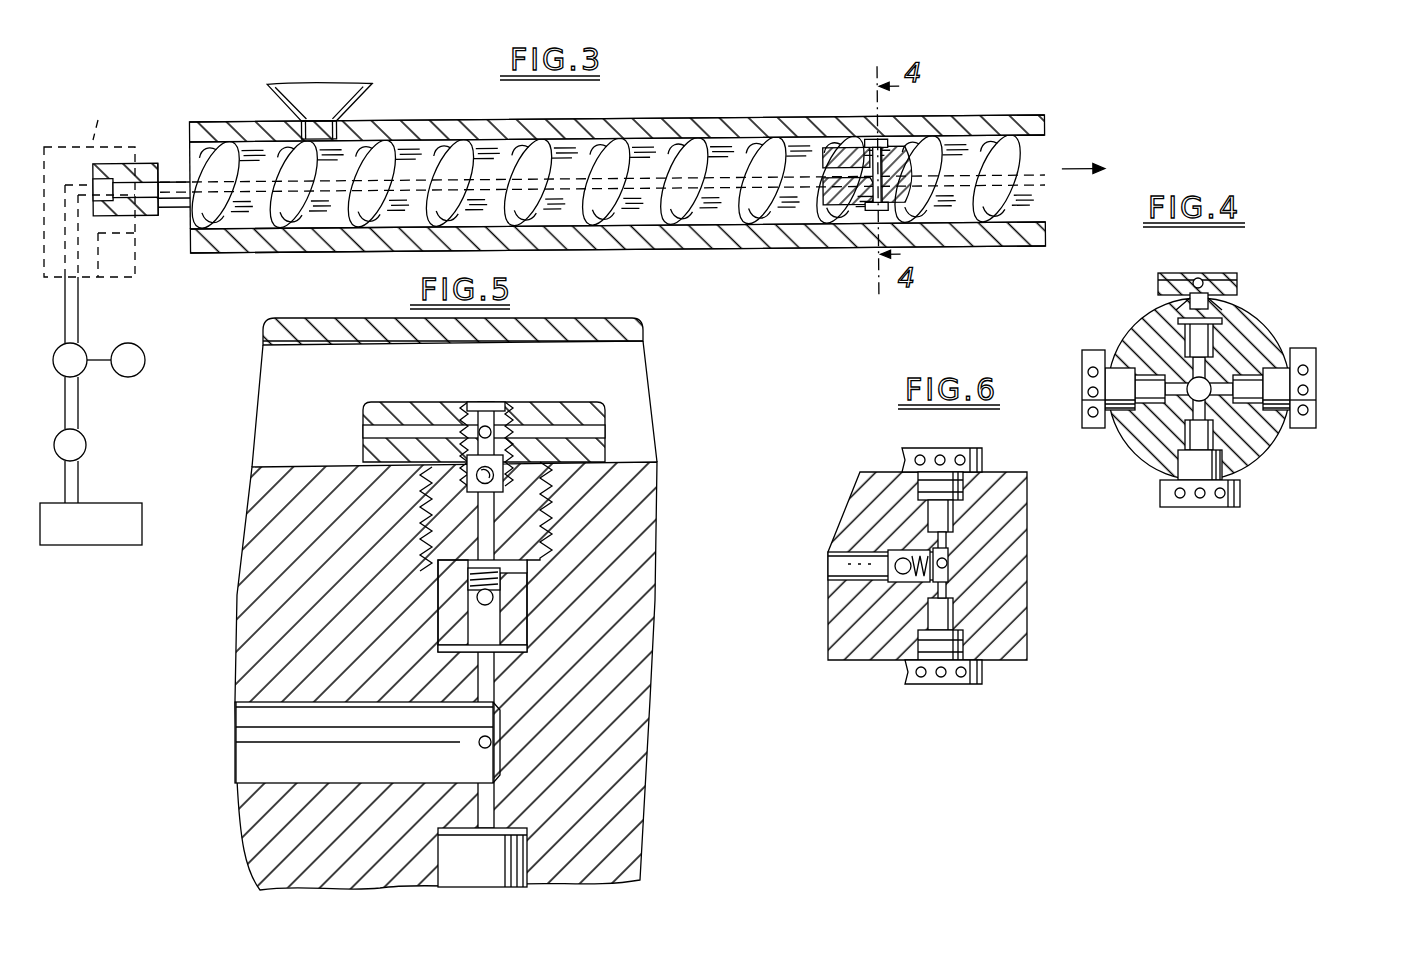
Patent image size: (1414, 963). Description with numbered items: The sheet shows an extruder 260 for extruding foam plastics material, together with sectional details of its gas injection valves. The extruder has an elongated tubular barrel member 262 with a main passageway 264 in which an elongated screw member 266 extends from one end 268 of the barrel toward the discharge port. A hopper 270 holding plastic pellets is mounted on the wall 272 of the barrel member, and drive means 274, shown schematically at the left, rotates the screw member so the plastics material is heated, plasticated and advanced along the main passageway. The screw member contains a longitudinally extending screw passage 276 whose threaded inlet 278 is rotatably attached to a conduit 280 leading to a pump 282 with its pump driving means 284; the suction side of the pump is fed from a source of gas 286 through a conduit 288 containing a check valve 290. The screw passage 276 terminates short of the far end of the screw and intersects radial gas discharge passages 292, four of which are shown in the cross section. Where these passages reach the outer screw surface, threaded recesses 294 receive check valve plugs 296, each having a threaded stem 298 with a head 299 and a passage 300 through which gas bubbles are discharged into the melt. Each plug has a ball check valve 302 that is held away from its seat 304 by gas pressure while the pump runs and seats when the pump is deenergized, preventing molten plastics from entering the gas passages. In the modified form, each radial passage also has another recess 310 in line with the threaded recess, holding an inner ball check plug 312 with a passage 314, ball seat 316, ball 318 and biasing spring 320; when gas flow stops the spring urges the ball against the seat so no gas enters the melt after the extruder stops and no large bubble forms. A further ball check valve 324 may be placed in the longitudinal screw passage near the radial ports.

In FIG. 3, the extruder 260 is at (262, 256).
In FIG. 3, the barrel member 262 is at (492, 128).
In FIG. 3, the main passageway 264 is at (556, 232).
In FIG. 5, the main passageway 264 is at (645, 340).
In FIG. 3, the screw member 266 is at (200, 152).
In FIG. 3, the one end of barrel 268 is at (222, 132).
In FIG. 3, the hopper 270 is at (350, 96).
In FIG. 3, the wall of the barrel member 272 is at (610, 132).
In FIG. 5, the wall of the barrel member 272 is at (645, 320).
In FIG. 3, the drive means 274 is at (89, 186).
In FIG. 3, the screw passage 276 is at (143, 192).
In FIG. 5, the screw passage 276 is at (258, 775).
In FIG. 4, the screw passage 276 is at (1190, 385).
In FIG. 6, the screw passage 276 is at (845, 565).
In FIG. 3, the threaded inlet 278 is at (100, 182).
In FIG. 3, the conduit 280 is at (78, 311).
In FIG. 3, the pump 282 is at (83, 372).
In FIG. 3, the pump driving means 284 is at (142, 350).
In FIG. 3, the source of gas 286 is at (87, 546).
In FIG. 3, the conduit 288 is at (78, 410).
In FIG. 3, the check valve 290 is at (86, 450).
In FIG. 5, the radial gas discharge passage 292 is at (500, 680).
In FIG. 4, the radial gas discharge passage 292 is at (1207, 395).
In FIG. 6, the radial gas discharge passage 292 is at (942, 565).
In FIG. 5, the threaded recess 294 is at (425, 522).
In FIG. 4, the threaded recess 294 is at (1192, 320).
In FIG. 6, the threaded recess 294 is at (927, 566).
In FIG. 3, the check valve plug 296 is at (876, 146).
In FIG. 5, the check valve plug 296 is at (570, 402).
In FIG. 4, the check valve plug 296 is at (1225, 275).
In FIG. 6, the check valve plug 296 is at (958, 448).
In FIG. 5, the threaded stem 298 is at (505, 483).
In FIG. 4, the threaded stem 298 is at (1210, 318).
In FIG. 5, the head 299 is at (608, 413).
In FIG. 5, the plug passage 300 is at (520, 530).
In FIG. 5, the ball check valve 302 is at (478, 472).
In FIG. 4, the ball check valve 302 is at (1206, 305).
In FIG. 5, the seat 304 is at (500, 480).
In FIG. 5, the recess 310 is at (520, 640).
In FIG. 5, the inner ball check plug 312 is at (440, 625).
In FIG. 5, the passage 314 is at (440, 645).
In FIG. 5, the ball seat 316 is at (500, 600).
In FIG. 5, the ball 318 is at (440, 592).
In FIG. 5, the biasing spring 320 is at (528, 590).
In FIG. 6, the ball check valve 324 is at (905, 572).